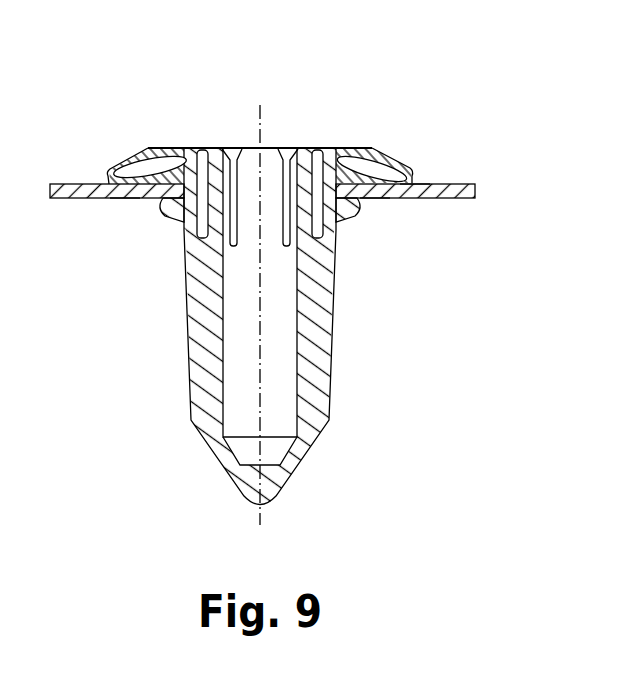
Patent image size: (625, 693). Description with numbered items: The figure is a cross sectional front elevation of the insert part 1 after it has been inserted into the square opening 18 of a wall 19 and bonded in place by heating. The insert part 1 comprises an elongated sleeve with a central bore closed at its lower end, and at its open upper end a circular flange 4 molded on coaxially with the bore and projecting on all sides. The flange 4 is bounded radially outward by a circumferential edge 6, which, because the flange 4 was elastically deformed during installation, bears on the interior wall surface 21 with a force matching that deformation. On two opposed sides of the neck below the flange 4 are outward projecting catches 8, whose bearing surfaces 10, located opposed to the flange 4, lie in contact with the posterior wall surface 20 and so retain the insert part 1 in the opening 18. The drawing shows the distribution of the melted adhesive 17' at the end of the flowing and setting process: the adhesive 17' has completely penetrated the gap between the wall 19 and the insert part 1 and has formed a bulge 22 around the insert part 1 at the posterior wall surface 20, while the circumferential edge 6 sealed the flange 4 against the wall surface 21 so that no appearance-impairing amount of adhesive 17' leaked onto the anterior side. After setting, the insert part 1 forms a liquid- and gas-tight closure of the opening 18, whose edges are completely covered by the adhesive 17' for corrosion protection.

The insert part 1 is at (280, 271).
The flange 4 is at (135, 148).
The circumferential edge 6 is at (412, 178).
The catches 8 is at (165, 212).
The bearing surfaces 10 is at (184, 236).
The melted adhesive 17' is at (373, 143).
The opening 18 is at (373, 200).
The wall 19 is at (413, 190).
The posterior wall surface 20 is at (123, 200).
The interior wall surface 21 is at (256, 197).
The bulge 22 is at (356, 204).